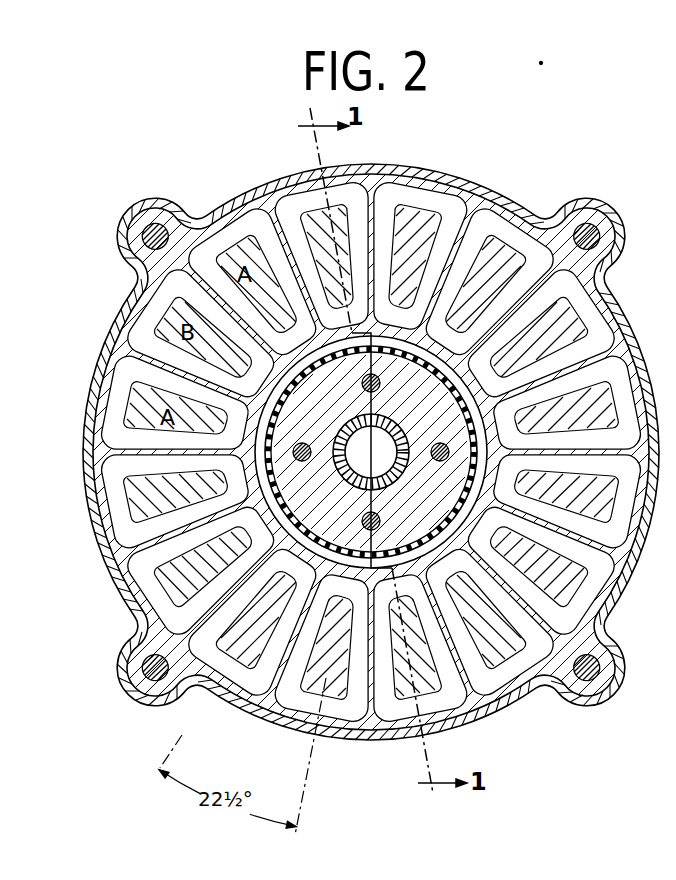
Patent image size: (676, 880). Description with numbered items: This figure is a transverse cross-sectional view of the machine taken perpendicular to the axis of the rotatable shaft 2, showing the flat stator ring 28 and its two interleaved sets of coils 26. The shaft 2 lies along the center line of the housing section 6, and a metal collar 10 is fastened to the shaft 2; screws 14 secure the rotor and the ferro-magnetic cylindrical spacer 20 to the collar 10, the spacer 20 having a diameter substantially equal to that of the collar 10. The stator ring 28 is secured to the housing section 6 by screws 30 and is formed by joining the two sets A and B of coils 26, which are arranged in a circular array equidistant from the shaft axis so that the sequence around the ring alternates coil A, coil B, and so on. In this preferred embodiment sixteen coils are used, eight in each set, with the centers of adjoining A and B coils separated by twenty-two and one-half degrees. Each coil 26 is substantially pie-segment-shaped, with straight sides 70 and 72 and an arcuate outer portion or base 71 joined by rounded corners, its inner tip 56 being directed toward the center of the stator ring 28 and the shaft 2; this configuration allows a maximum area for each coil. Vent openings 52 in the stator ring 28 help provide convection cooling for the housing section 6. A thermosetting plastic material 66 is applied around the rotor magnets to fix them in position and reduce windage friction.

The rotatable shaft 2 is at (360, 492).
The housing section 6 is at (610, 300).
The metal collar 10 is at (340, 472).
The screws 14 is at (302, 443).
The ferro-magnetic cylindrical spacer 20 is at (432, 508).
The coils 26 is at (302, 186).
The stator ring 28 is at (240, 643).
The screws 30 is at (150, 222).
The vent openings 52 is at (490, 190).
The inner tip 56 is at (320, 368).
The thermosetting plastic material 66 is at (290, 588).
The straight side 70 is at (224, 240).
The arcuate outer portion 71 is at (445, 203).
The straight side 72 is at (282, 248).